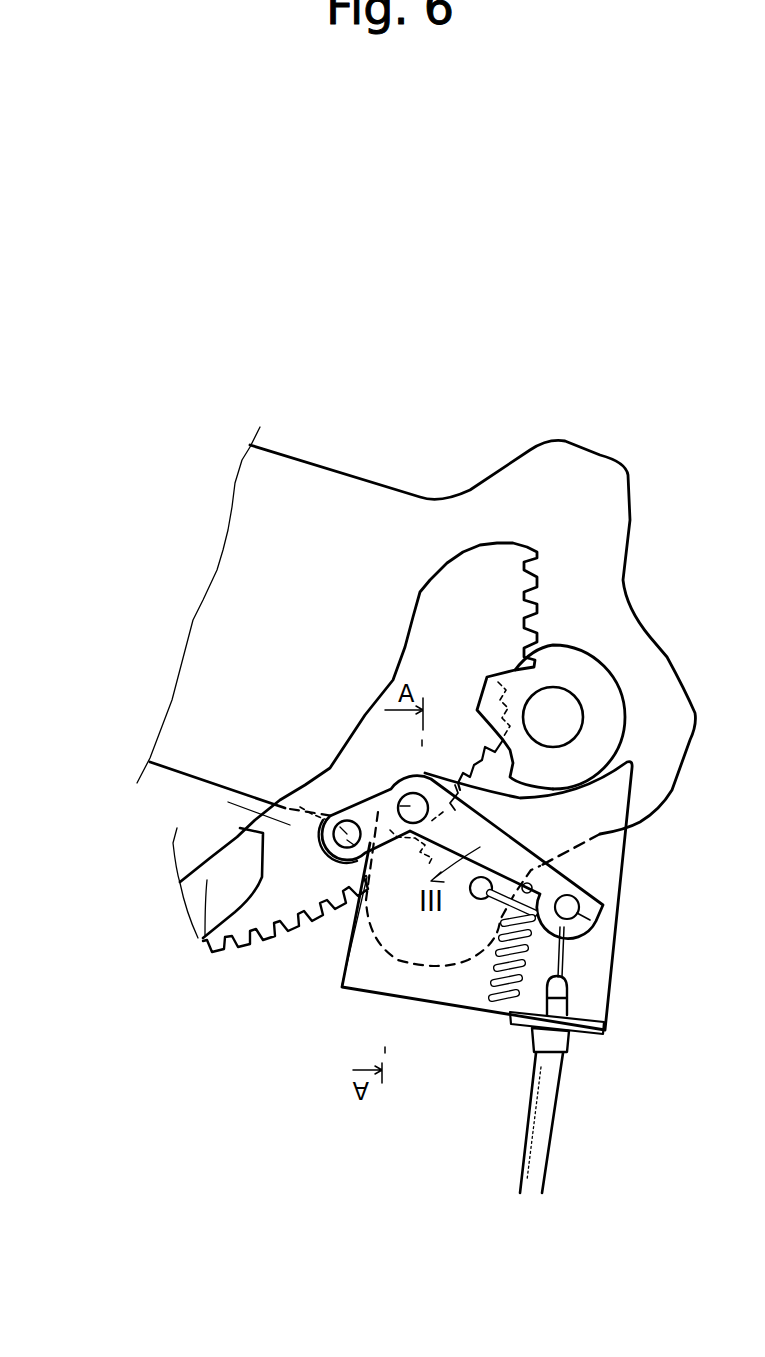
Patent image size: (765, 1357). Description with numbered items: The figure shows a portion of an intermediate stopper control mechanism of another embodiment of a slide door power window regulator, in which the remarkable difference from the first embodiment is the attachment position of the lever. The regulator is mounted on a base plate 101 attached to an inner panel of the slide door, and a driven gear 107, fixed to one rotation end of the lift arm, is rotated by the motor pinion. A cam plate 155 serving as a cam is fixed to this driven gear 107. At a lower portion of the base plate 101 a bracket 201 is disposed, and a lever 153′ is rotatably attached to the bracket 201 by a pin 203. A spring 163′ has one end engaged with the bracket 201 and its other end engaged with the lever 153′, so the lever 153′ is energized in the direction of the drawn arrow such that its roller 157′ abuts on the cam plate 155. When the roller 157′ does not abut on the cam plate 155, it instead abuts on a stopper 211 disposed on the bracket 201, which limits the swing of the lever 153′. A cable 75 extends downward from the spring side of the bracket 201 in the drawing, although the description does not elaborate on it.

The base plate 101 is at (272, 490).
The driven gear 107 is at (273, 806).
The cam plate 155 is at (198, 940).
The bracket 201 is at (388, 983).
The lever 153′ is at (516, 857).
The pin 203 is at (383, 797).
The roller 157′ is at (343, 795).
The stopper 211 is at (566, 932).
The spring 163′ is at (527, 988).
The cable 75 is at (550, 1128).